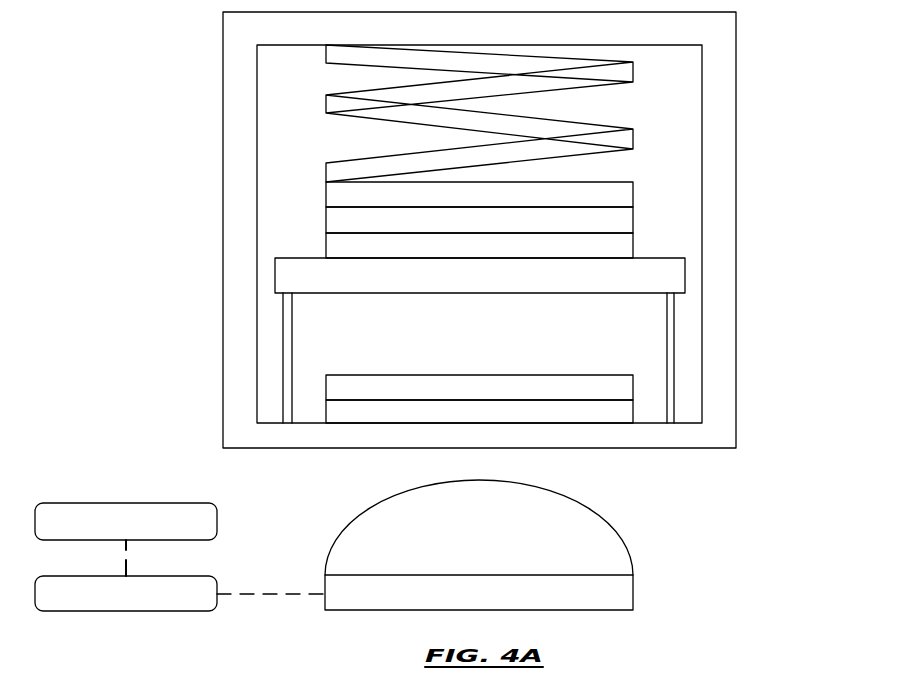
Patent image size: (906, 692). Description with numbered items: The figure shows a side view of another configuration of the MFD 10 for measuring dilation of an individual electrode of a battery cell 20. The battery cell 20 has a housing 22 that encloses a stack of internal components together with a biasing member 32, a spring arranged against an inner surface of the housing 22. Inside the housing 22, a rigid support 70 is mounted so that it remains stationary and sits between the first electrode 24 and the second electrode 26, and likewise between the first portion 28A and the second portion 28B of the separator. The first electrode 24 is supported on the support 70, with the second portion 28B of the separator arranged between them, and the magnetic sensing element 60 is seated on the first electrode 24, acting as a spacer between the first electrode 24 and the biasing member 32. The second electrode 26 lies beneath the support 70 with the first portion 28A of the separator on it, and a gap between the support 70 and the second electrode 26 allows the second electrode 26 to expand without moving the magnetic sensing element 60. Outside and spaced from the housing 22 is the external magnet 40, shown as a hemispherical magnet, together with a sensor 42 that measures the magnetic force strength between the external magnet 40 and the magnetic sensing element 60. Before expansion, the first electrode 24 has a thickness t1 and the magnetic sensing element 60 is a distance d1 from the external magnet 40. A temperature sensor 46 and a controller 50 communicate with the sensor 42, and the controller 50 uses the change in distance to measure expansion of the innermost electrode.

The MFD 10 is at (150, 72).
The battery cell 20 is at (736, 65).
The housing 22 is at (716, 130).
The biasing member 32 is at (326, 112).
The magnetic sensing element 60 is at (326, 196).
The first electrode 24 is at (326, 222).
The second portion of the separator 28B is at (326, 244).
The support 70 is at (275, 276).
The first portion of the separator 28A is at (326, 388).
The second electrode 26 is at (326, 412).
The distance d1 is at (479, 214).
The thickness t1 is at (642, 207).
The external magnet 40 is at (597, 548).
The sensor 42 is at (615, 594).
The temperature sensor 46 is at (195, 503).
The controller 50 is at (195, 576).